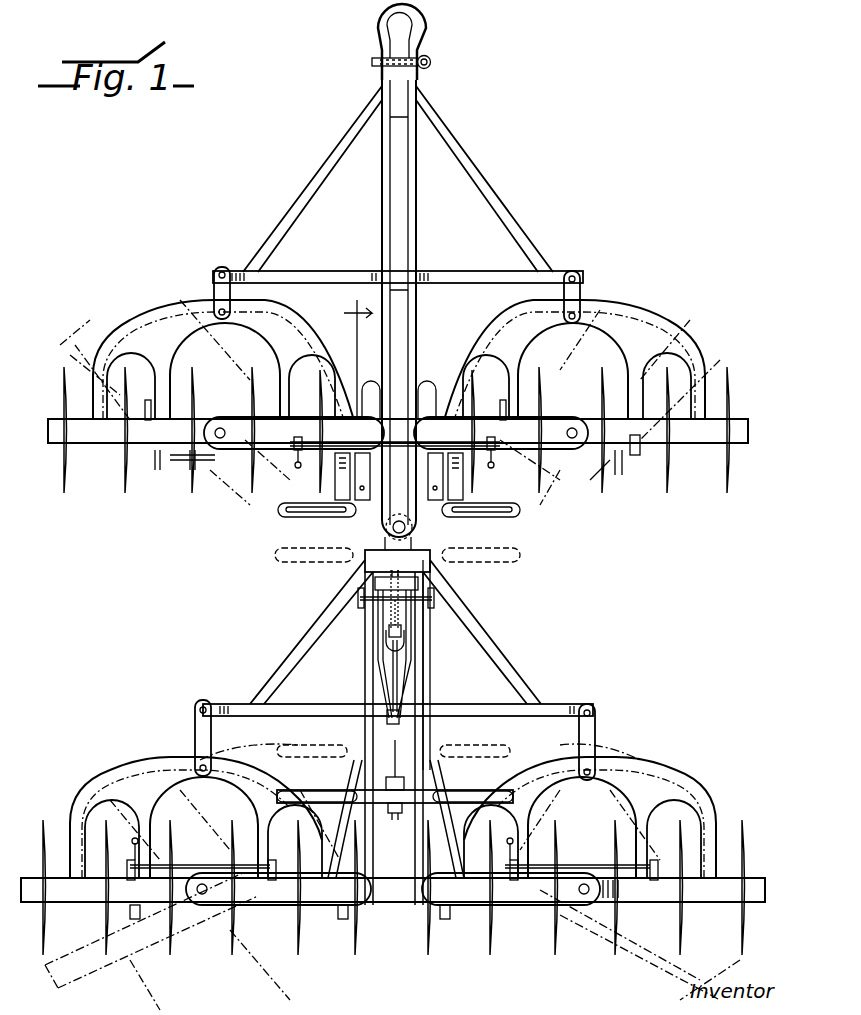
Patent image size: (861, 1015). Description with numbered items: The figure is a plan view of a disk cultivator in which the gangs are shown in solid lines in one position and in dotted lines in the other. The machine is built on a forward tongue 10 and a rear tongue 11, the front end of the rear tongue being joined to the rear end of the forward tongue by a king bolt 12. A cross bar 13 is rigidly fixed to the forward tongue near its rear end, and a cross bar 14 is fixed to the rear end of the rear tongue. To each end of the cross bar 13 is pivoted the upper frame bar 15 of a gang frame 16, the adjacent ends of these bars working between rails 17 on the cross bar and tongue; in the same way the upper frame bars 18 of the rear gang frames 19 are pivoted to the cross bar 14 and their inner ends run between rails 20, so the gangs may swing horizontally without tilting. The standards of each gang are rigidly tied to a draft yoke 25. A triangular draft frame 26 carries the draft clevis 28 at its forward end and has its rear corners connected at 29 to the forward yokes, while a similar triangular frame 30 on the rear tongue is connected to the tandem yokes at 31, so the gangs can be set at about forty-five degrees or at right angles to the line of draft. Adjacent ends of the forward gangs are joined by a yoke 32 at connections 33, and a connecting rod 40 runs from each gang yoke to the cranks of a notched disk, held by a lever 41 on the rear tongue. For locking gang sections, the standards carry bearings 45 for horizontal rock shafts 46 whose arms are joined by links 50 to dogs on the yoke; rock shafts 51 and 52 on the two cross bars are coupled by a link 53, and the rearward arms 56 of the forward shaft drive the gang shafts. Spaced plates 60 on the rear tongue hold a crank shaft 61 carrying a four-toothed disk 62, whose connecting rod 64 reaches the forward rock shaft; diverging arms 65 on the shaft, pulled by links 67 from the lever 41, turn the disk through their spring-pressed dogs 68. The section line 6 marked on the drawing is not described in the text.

The draft clevis 28 is at (420, 18).
The forward tongue 10 is at (417, 200).
The triangular draft frame 26 is at (333, 165).
The draft yoke 25 is at (345, 332).
The connection 29 is at (218, 308).
The section arrow 6 is at (358, 309).
The rails 17 is at (354, 374).
The upper frame bar 15 is at (115, 447).
The gang frame 16 is at (55, 463).
The links 50 is at (260, 433).
The rock shaft 51 is at (501, 433).
The rearwardly directed arms 56 is at (300, 465).
The bearings 45 is at (175, 455).
The rock shaft 46 is at (185, 480).
The cross bar 13 is at (240, 480).
The connecting rod 64 is at (450, 488).
The yoke 32 is at (280, 515).
The connection 33 is at (481, 532).
The king bolt 12 is at (392, 530).
The rear tongue 11 is at (430, 690).
The crank shaft 61 is at (375, 584).
The spaced plates 60 is at (360, 598).
The arm 65 is at (386, 650).
The link 67 is at (380, 672).
The spring-pressed dog 68 is at (401, 632).
The link 53 is at (440, 660).
The lever 41 is at (387, 714).
The disk 62 is at (440, 578).
The triangular frame 30 is at (300, 625).
The connecting rod 40 is at (390, 790).
The rock shaft 52 is at (400, 905).
The rails 20 is at (343, 920).
The gang frame 19 is at (752, 828).
The upper frame bar 18 is at (38, 870).
The connection 31 is at (222, 925).
The cross bar 14 is at (247, 921).